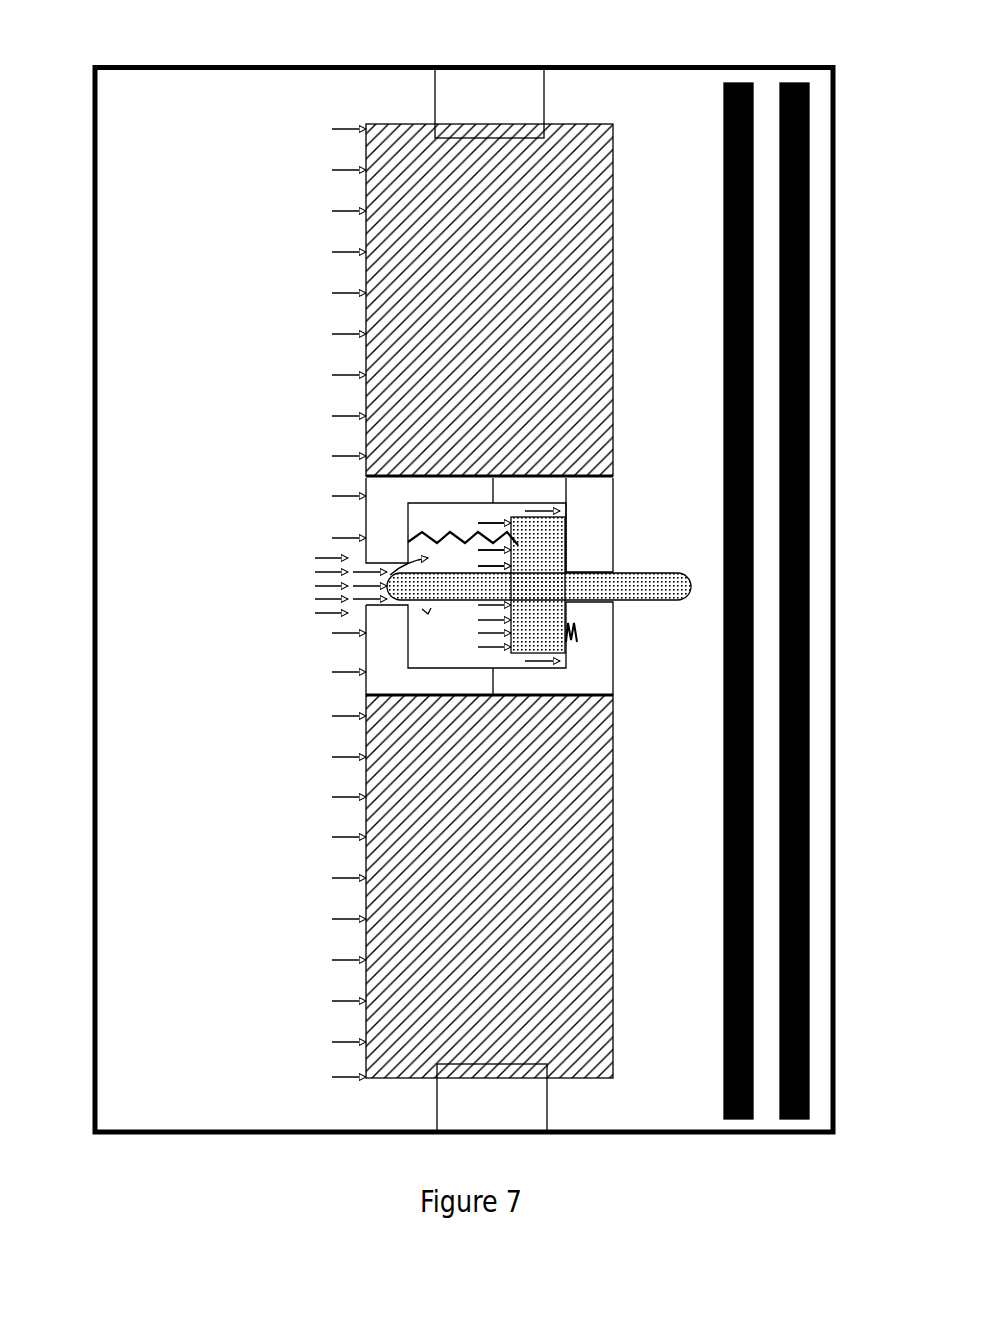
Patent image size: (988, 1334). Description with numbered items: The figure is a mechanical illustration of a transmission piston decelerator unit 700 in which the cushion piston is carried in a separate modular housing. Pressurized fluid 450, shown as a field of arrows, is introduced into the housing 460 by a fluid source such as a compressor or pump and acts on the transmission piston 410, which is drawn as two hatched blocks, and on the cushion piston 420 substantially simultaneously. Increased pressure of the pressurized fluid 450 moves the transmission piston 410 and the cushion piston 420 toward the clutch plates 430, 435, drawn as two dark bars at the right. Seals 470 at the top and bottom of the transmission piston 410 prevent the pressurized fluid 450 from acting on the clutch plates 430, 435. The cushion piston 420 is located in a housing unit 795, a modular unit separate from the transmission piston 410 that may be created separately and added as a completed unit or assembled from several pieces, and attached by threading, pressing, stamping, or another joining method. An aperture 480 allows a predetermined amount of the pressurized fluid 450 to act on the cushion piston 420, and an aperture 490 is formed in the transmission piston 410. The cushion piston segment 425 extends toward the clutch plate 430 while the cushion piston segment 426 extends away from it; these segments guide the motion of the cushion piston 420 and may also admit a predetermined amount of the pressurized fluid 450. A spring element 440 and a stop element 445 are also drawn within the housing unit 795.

The transmission piston decelerator unit 700 is at (98, 50).
The housing 460 is at (98, 181).
The seals 470 is at (544, 100).
The clutch plate 430 is at (721, 166).
The clutch plate 435 is at (807, 207).
The transmission piston 410 is at (613, 318).
The pressurized fluid 450 is at (325, 293).
The spring 440 is at (398, 532).
The aperture 490 is at (618, 572).
The housing unit 795 is at (605, 682).
The cushion piston 420 is at (563, 530).
The cushion piston segment 425 is at (655, 584).
The stop 445 is at (575, 640).
The aperture 480 is at (363, 592).
The cushion piston segment 426 is at (440, 593).